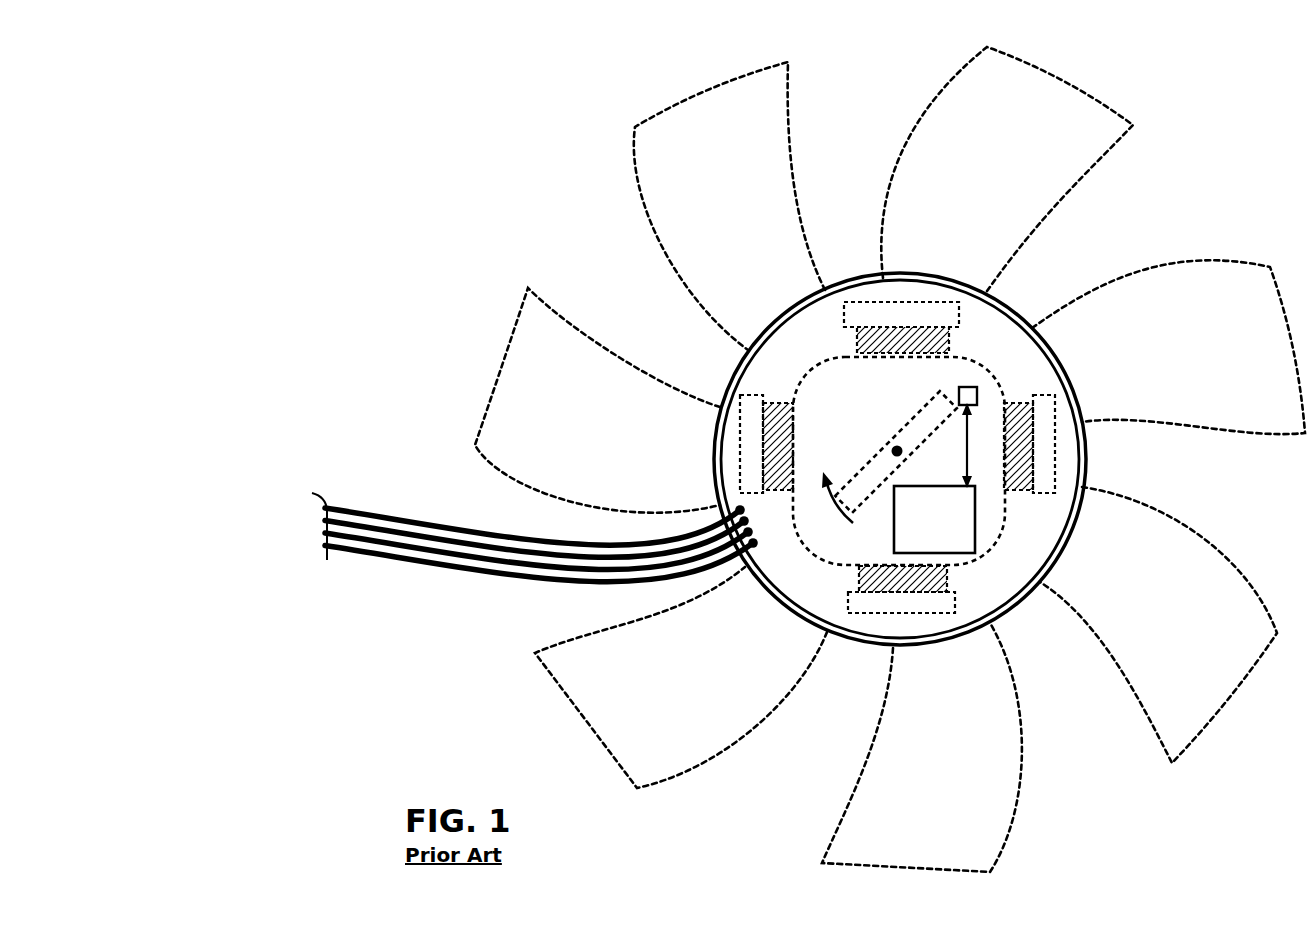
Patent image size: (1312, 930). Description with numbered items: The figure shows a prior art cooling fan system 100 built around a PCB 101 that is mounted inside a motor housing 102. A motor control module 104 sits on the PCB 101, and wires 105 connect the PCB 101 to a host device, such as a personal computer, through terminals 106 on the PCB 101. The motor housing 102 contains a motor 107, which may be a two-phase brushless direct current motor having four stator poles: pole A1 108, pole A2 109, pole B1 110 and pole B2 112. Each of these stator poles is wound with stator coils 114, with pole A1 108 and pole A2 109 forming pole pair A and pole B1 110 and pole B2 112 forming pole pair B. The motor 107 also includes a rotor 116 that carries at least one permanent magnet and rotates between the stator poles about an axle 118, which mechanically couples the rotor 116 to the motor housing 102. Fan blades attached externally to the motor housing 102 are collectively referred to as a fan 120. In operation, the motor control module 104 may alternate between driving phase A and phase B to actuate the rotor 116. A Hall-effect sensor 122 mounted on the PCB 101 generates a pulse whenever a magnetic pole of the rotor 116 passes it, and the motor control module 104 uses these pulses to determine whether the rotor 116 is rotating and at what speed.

The cooling fan system 100 is at (450, 249).
The PCB 101 is at (1035, 527).
The motor housing 102 is at (1058, 366).
The motor control module 104 is at (894, 521).
The wires 105 is at (428, 518).
The terminals 106 is at (757, 545).
The motor 107 is at (985, 330).
The pole A1 108 is at (845, 318).
The pole A2 109 is at (954, 592).
The pole B1 110 is at (752, 395).
The pole B2 112 is at (1037, 395).
The stator coils 114 is at (893, 353).
The rotor 116 is at (935, 430).
The axle 118 is at (891, 450).
The fan 120 is at (1108, 181).
The Hall-effect sensor 122 is at (963, 388).